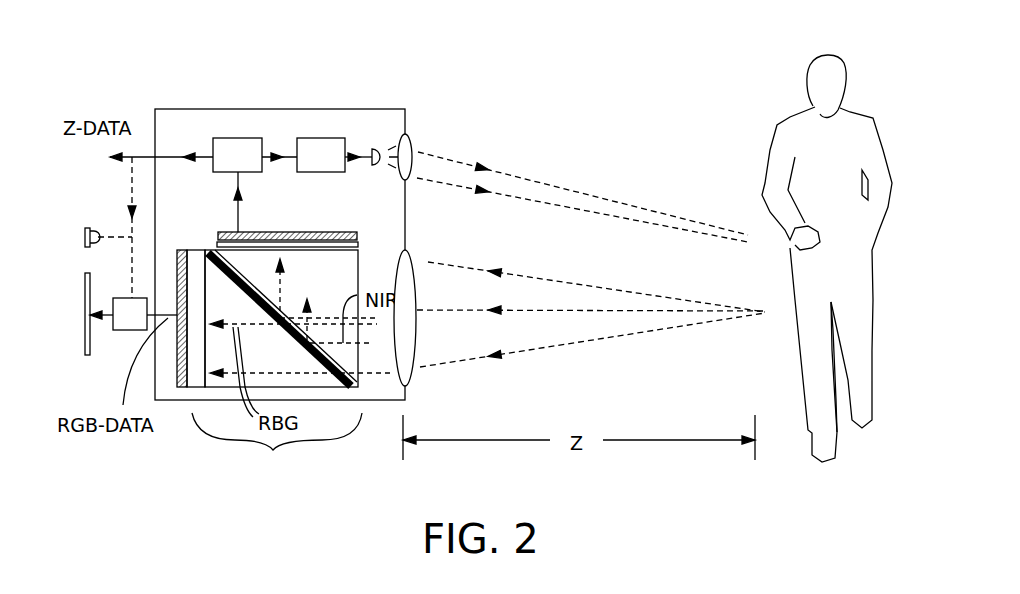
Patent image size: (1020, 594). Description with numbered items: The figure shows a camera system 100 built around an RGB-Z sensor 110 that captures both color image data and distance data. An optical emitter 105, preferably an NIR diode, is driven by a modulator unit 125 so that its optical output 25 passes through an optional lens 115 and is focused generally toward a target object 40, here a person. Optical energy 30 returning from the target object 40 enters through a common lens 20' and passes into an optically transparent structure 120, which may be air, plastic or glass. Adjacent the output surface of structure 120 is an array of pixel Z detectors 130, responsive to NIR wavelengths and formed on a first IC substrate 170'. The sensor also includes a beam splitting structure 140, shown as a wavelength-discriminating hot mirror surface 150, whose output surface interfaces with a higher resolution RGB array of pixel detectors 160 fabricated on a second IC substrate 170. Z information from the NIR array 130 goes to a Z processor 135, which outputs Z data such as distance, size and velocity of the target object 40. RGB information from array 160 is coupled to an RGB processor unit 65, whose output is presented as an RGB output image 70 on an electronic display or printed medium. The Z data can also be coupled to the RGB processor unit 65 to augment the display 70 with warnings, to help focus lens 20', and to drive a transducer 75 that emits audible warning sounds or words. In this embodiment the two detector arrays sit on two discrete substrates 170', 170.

The camera system 100 is at (288, 100).
The optical emitter 105 is at (382, 147).
The lens 115 is at (409, 143).
The optical output 25 is at (560, 188).
The target object 40 is at (757, 122).
The optical energy 30 is at (533, 272).
The lens 20' is at (431, 318).
The Z processor 135 is at (255, 185).
The modulator unit 125 is at (334, 155).
The second IC substrate 170 is at (176, 286).
The RGB array of pixel detectors 160 is at (195, 248).
The first IC substrate 170' is at (287, 220).
The array of pixel Z detectors 130 is at (357, 238).
The optically transparent structure 120 is at (302, 299).
The hot mirror surface 150 is at (228, 273).
The beam splitting structure 140 is at (301, 347).
The RGB processor unit 65 is at (133, 314).
The transducer 75 is at (84, 237).
The RGB output image 70 is at (84, 302).
The RGB-Z sensor 110 is at (277, 448).